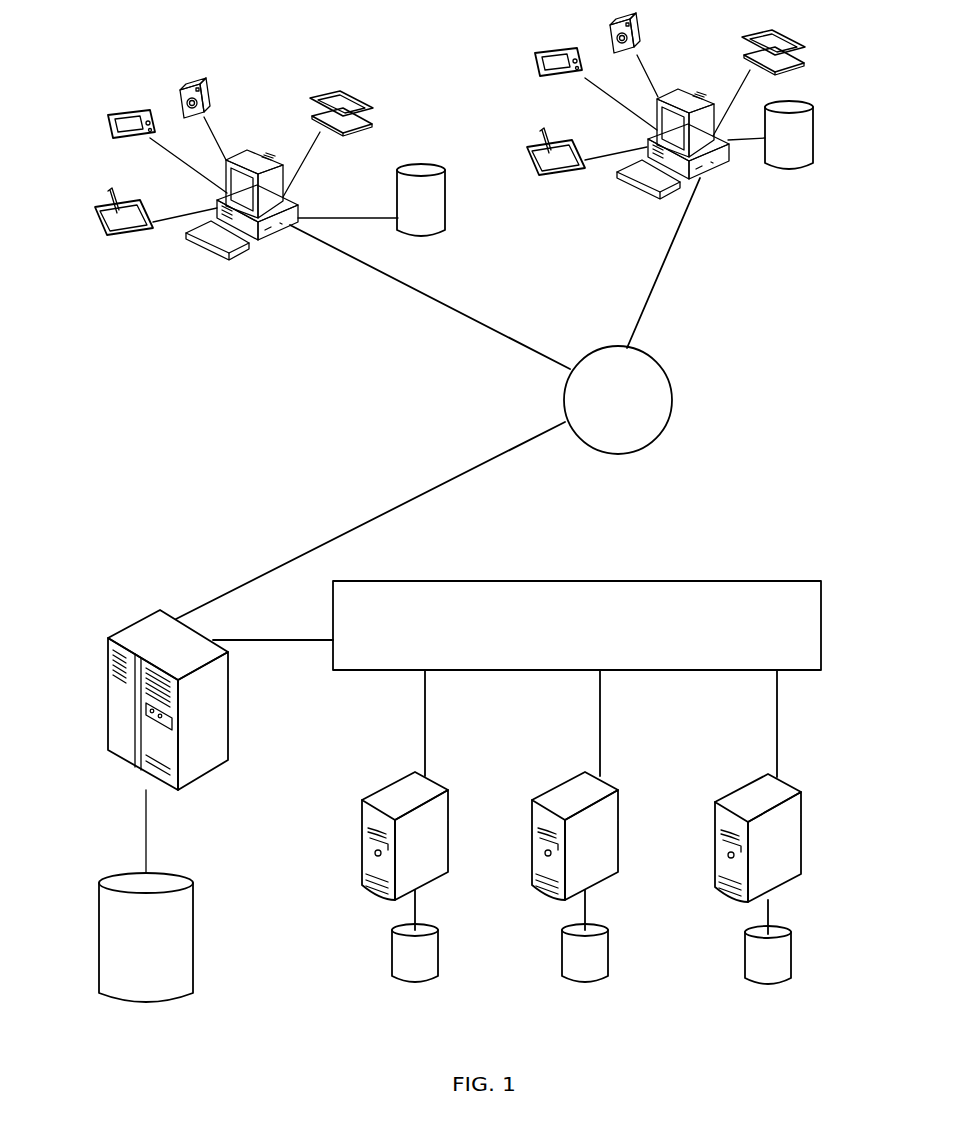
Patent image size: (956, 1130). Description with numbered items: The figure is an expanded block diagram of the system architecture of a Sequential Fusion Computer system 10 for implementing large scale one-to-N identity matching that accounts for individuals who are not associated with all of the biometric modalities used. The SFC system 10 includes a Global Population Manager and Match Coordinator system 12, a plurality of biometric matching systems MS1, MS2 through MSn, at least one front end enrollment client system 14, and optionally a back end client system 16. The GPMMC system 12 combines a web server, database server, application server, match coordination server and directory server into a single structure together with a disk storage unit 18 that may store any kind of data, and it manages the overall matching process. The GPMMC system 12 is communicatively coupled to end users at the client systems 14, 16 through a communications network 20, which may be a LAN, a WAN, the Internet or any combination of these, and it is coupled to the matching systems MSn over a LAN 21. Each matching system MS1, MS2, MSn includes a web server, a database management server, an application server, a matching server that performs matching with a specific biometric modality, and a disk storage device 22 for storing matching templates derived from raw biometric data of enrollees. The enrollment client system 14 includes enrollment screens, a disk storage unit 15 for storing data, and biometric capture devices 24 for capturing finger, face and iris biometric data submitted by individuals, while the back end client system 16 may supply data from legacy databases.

The Sequential Fusion Computer (SFC) system 10 is at (118, 32).
The Global Population Manager and Match Coordinator (GPMMC) system 12 is at (145, 616).
The front end enrollment client system 14 is at (298, 203).
The disk storage unit 15 is at (435, 215).
The back end client system 16 is at (712, 168).
The disk storage unit 18 is at (162, 957).
The communications network 20 is at (652, 357).
The LAN 21 is at (612, 581).
The disk storage device 22 is at (560, 955).
The biometric capture devices 24 is at (313, 92).
The biometric matching system MS1 is at (402, 774).
The biometric matching system MS2 is at (573, 773).
The biometric matching systems MSn is at (755, 762).